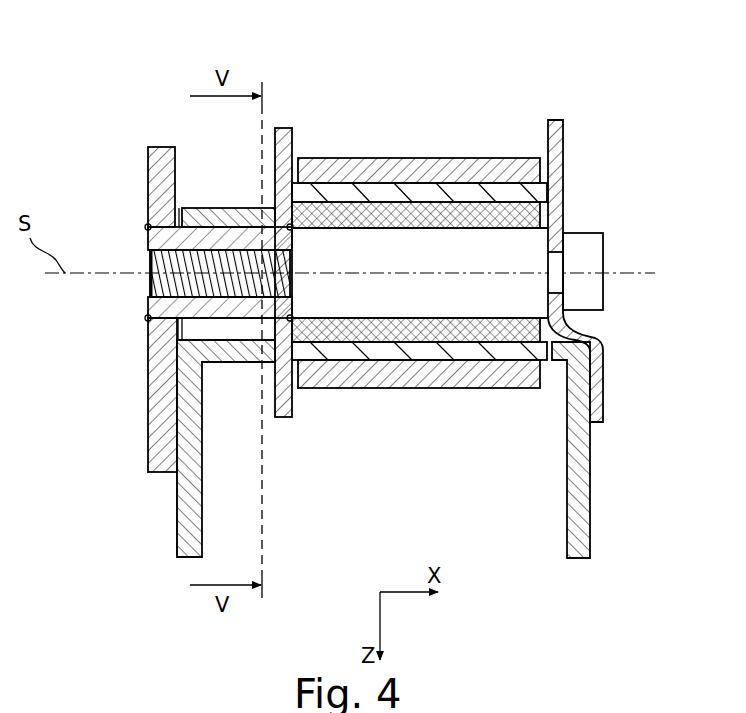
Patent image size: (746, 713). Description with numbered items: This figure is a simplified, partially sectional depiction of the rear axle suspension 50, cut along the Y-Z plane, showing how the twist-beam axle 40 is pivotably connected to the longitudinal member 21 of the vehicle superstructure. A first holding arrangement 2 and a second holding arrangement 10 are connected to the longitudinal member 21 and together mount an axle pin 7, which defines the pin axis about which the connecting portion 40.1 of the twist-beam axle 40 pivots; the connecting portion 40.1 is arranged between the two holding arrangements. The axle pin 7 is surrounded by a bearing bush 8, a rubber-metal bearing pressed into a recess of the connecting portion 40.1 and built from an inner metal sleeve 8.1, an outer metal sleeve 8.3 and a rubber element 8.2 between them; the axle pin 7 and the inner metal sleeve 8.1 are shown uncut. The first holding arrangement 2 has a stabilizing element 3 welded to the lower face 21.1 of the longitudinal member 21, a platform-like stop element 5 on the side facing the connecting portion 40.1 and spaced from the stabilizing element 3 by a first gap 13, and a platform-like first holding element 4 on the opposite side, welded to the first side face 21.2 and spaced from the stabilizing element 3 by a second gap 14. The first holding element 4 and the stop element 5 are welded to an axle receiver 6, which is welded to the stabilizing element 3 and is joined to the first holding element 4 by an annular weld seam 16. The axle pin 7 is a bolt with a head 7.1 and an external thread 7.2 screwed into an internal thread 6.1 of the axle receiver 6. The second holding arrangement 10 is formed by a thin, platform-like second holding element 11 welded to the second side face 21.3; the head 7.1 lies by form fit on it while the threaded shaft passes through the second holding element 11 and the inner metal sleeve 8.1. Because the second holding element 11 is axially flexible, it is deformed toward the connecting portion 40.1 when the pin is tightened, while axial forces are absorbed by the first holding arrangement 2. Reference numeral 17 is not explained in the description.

The first holding arrangement 2 is at (161, 91).
The first holding element 4 is at (160, 147).
The first gap 13 is at (183, 206).
The stabilizing element 3 is at (220, 214).
The axle receiver 6 is at (270, 206).
The second gap 14 is at (272, 148).
The twist-beam axle 40 is at (291, 225).
The sleeve 17 is at (302, 172).
The connecting portion 40.1 is at (403, 147).
The outer metal sleeve 8.3 is at (433, 192).
The rubber element 8.2 is at (462, 208).
The inner metal sleeve 8.1 is at (497, 242).
The rear axle suspension 50 is at (543, 96).
The second holding arrangement 10 is at (571, 116).
The second holding element 11 is at (560, 186).
The external thread 7.2 is at (150, 205).
The annular weld seam 16 is at (230, 266).
The head 7.1 is at (605, 258).
The axle pin 7 is at (558, 281).
The internal thread 6.1 is at (147, 291).
The lower face 21.1 is at (217, 336).
The stop element 5 is at (274, 402).
The bearing bush 8 is at (443, 368).
The first side face 21.2 is at (176, 492).
The longitudinal member 21 is at (185, 542).
The second side face 21.3 is at (594, 512).